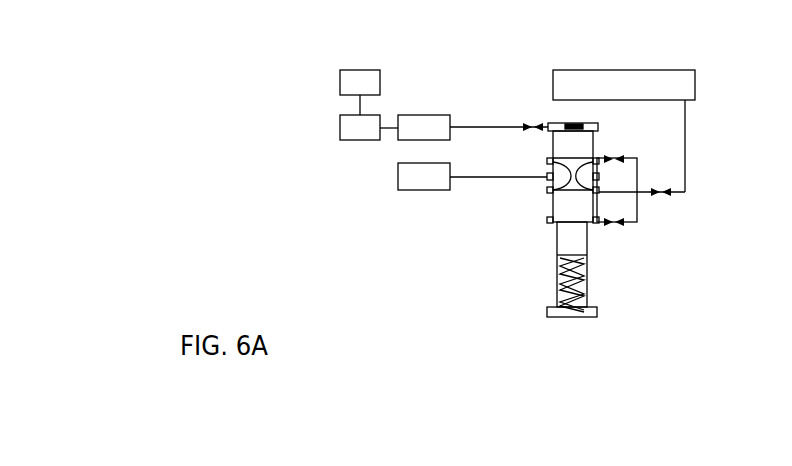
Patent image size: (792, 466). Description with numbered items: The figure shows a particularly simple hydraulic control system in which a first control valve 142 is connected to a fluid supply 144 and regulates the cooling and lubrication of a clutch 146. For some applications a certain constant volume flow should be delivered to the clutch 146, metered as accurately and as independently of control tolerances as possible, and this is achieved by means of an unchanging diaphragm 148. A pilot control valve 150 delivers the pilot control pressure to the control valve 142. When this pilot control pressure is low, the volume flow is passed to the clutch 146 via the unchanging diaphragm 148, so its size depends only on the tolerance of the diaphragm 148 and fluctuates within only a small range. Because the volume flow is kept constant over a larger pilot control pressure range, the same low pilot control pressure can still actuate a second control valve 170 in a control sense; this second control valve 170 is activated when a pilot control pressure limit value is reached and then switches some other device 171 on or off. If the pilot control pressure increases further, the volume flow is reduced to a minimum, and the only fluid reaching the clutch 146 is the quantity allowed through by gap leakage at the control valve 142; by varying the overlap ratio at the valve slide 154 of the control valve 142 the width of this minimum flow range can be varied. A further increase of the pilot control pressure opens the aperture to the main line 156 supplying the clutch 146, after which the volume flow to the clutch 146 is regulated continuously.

The first control valve 142 is at (544, 118).
The fluid supply 144 is at (410, 177).
The clutch 146 is at (580, 85).
The unchanging diaphragm 148 is at (620, 158).
The pilot control valve 150 is at (420, 140).
The valve slide 154 is at (560, 203).
The main line 156 is at (618, 192).
The second control valve 170 is at (352, 128).
The other device 171 is at (352, 83).